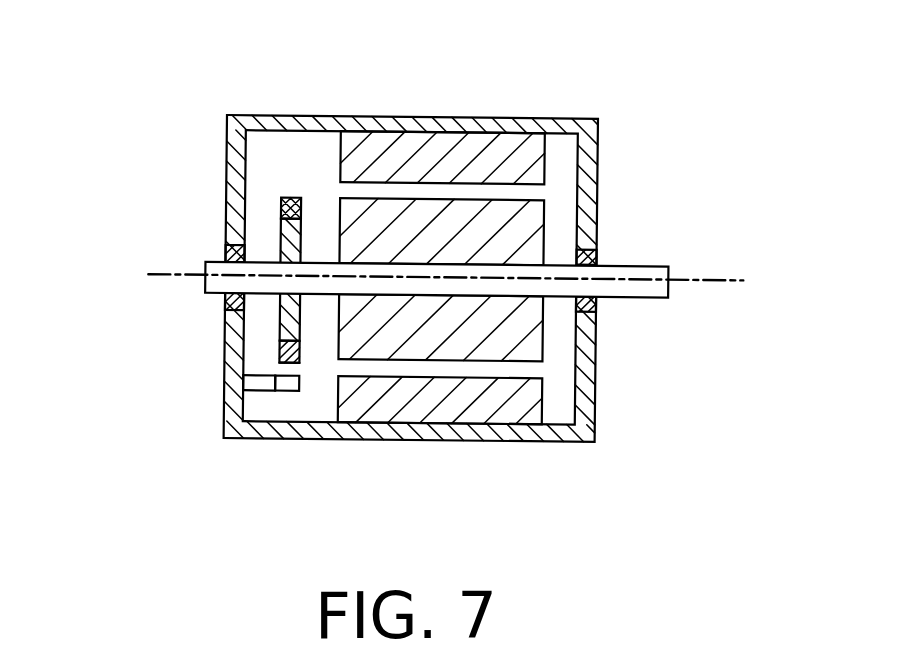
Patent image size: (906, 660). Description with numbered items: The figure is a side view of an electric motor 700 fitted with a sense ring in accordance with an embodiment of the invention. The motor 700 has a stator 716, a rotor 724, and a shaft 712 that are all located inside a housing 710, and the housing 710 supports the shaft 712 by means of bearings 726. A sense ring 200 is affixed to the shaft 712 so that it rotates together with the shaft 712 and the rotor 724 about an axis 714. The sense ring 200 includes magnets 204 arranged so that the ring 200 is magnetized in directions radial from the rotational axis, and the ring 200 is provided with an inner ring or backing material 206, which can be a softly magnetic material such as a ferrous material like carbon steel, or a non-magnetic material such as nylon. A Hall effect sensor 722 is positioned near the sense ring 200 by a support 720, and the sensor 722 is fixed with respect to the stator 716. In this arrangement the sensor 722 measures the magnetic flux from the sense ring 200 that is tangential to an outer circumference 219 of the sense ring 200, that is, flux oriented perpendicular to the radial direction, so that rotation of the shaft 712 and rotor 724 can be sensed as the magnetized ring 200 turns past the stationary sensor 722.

The motor 700 is at (203, 92).
The housing 710 is at (518, 125).
The stator 716 is at (413, 143).
The rotor 724 is at (532, 349).
The shaft 712 is at (622, 267).
The axis 714 is at (713, 276).
The bearings 726 is at (227, 253).
The magnets 204 is at (282, 199).
The inner ring or backing material 206 is at (282, 325).
The sense ring 200 is at (282, 350).
The outer circumference 219 is at (300, 363).
The support 720 is at (262, 383).
The Hall effect sensor 722 is at (292, 385).